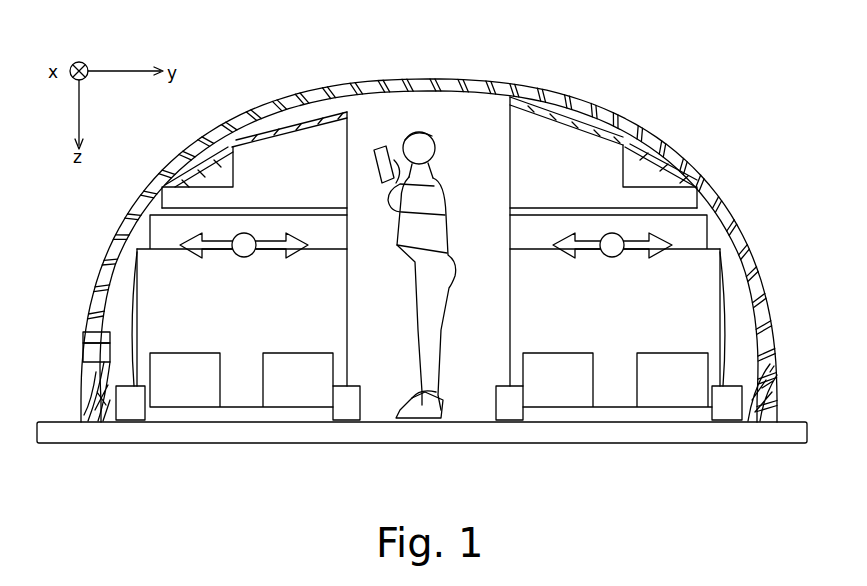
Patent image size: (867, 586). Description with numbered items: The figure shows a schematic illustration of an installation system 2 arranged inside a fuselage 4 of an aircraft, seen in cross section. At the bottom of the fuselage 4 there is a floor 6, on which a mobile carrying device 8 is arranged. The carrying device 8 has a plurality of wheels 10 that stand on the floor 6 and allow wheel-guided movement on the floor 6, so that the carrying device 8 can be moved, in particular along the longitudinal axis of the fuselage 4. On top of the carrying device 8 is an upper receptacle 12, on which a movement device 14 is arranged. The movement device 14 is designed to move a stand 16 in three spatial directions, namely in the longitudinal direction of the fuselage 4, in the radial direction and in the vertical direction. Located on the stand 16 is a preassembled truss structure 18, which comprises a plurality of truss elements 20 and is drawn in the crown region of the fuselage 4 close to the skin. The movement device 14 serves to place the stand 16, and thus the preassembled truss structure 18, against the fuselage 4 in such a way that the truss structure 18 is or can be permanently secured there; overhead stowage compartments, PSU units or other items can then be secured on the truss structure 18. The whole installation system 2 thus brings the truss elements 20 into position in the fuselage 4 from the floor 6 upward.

The installation system 2 is at (358, 113).
The fuselage 4 is at (88, 283).
The floor 6 is at (543, 435).
The mobile carrying device 8 is at (328, 313).
The wheels 10 is at (133, 410).
The upper receptacle 12 is at (325, 246).
The movement device 14 is at (165, 233).
The stand 16 is at (335, 158).
The preassembled truss structure 18 is at (308, 93).
The truss elements 20 is at (285, 120).